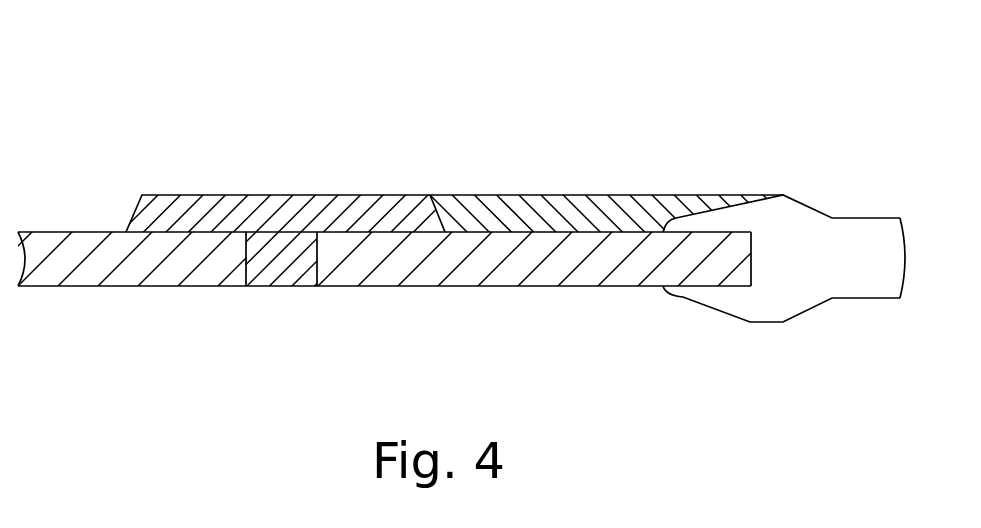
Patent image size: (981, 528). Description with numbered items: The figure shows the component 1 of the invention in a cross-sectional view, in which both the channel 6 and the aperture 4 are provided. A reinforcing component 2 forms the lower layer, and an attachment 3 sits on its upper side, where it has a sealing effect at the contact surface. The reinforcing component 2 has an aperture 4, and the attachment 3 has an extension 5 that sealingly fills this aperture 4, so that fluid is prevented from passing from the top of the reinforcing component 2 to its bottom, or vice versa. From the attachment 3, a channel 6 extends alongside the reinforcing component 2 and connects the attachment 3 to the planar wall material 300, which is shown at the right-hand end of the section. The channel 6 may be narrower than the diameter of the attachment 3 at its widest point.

The component 1 is at (697, 125).
The reinforcing component 2 is at (108, 287).
The attachment 3 is at (192, 195).
The aperture 4 is at (317, 267).
The extension 5 is at (264, 287).
The channel 6 is at (535, 195).
The planar wall material 300 is at (807, 205).